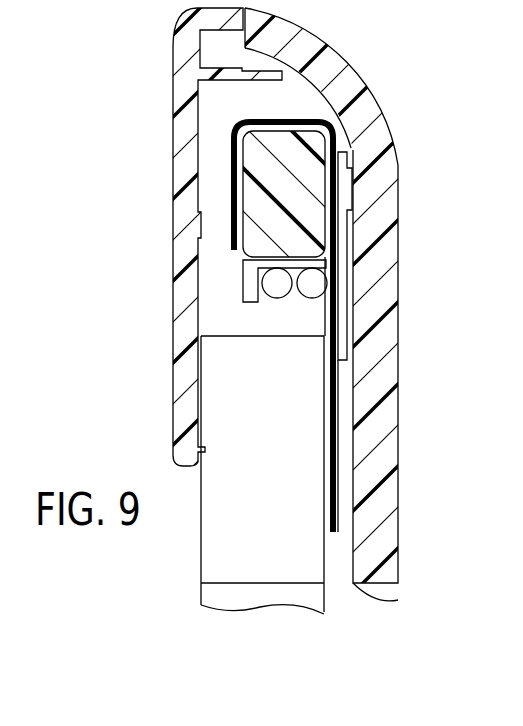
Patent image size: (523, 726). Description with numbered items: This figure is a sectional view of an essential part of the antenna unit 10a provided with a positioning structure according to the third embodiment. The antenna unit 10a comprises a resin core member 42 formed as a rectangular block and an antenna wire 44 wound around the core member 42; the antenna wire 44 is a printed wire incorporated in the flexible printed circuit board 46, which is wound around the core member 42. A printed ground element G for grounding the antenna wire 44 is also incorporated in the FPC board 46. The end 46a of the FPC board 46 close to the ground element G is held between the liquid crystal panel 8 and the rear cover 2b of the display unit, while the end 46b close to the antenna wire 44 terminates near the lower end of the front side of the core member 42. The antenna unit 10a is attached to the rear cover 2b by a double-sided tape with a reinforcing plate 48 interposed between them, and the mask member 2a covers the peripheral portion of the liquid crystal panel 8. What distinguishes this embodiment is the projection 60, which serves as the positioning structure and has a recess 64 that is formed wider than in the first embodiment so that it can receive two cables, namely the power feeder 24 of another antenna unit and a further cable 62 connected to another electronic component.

The antenna unit 10a is at (305, 100).
The mask member 2a is at (178, 234).
The rear cover 2b is at (380, 140).
The flexible printed circuit board 46 is at (238, 126).
The antenna wire 44 is at (215, 320).
The end of the FPC board close to the ground element 46a is at (331, 538).
The end of the FPC board close to the antenna wire 46b is at (228, 258).
The core member 42 is at (250, 190).
The reinforcing plate 48 is at (340, 252).
The recess 64 is at (327, 288).
The projection 60 is at (246, 284).
The cable 62 is at (280, 298).
The power feeder 24 is at (317, 298).
The liquid crystal panel 8 is at (210, 548).
The ground element G is at (330, 495).